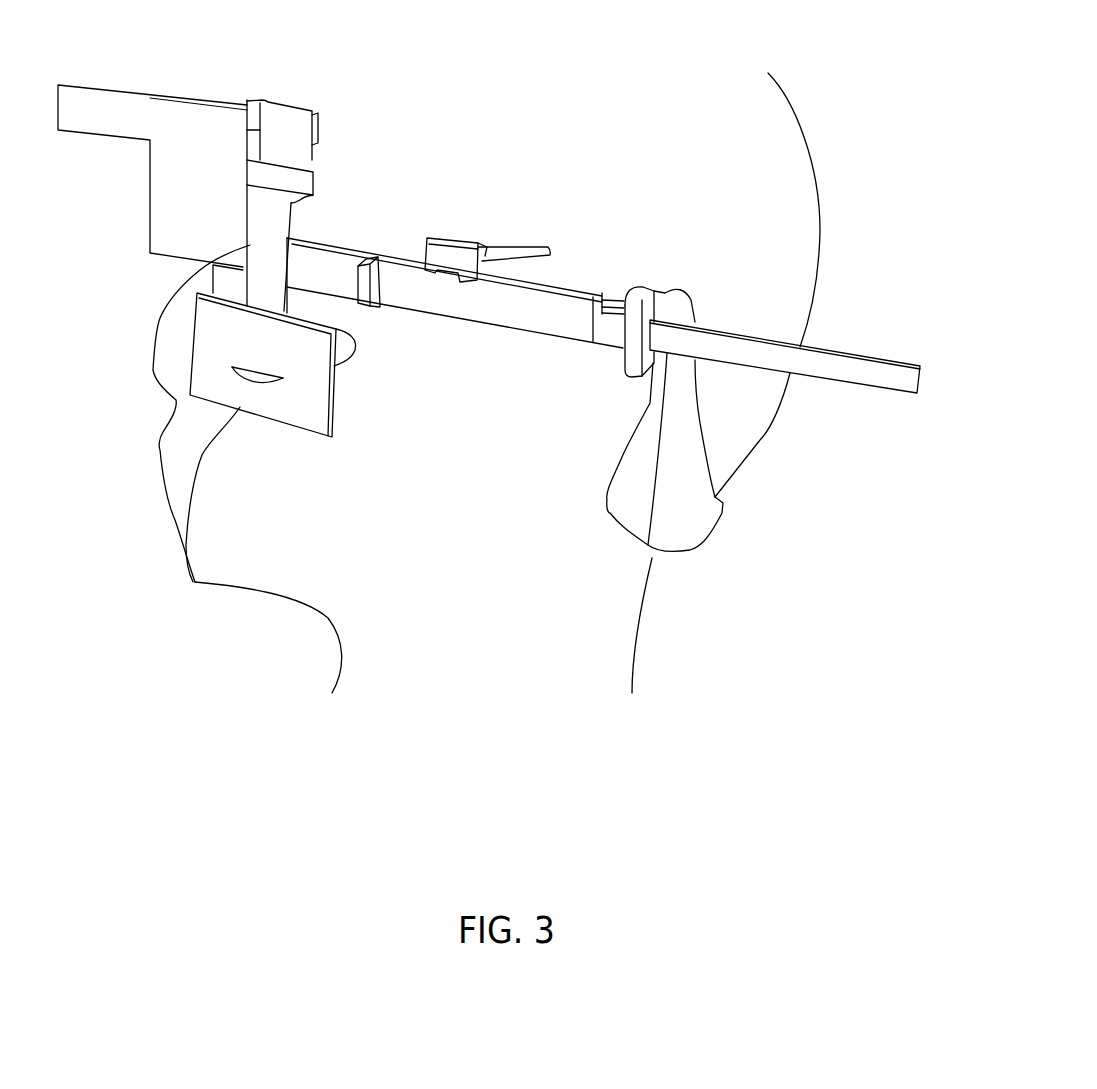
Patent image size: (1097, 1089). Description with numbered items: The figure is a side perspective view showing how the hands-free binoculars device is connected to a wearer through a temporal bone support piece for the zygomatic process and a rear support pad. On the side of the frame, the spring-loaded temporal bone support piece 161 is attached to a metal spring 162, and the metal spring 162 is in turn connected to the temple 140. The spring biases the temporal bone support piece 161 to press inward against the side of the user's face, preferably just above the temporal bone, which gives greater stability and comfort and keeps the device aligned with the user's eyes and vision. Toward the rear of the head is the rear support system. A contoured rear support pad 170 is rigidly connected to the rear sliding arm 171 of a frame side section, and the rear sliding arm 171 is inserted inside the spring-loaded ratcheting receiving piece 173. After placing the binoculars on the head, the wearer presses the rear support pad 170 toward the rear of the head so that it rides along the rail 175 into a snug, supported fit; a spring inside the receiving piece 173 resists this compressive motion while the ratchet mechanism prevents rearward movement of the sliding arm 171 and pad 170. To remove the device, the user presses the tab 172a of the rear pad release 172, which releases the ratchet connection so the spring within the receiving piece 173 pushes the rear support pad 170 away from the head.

The temple 140 is at (212, 130).
The temporal bone support piece 161 is at (172, 410).
The metal spring 162 is at (162, 310).
The rear support pad 170 is at (685, 492).
The rear sliding arm 171 is at (613, 330).
The rear pad release 172 is at (453, 252).
The tab 172a is at (518, 253).
The spring-loaded ratcheting receiving piece 173 is at (554, 335).
The rail 175 is at (757, 350).